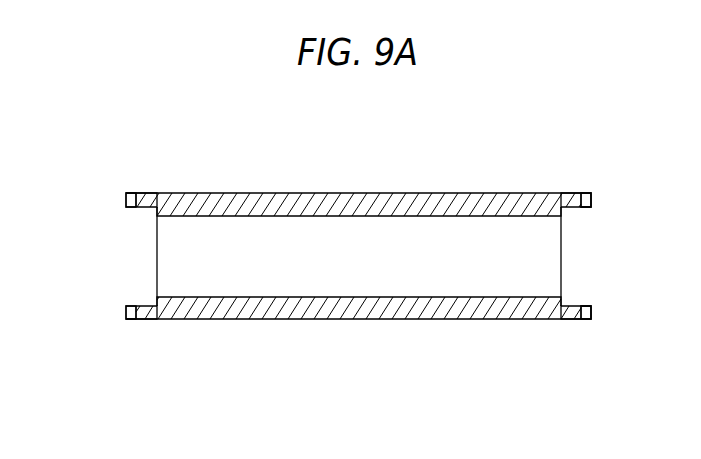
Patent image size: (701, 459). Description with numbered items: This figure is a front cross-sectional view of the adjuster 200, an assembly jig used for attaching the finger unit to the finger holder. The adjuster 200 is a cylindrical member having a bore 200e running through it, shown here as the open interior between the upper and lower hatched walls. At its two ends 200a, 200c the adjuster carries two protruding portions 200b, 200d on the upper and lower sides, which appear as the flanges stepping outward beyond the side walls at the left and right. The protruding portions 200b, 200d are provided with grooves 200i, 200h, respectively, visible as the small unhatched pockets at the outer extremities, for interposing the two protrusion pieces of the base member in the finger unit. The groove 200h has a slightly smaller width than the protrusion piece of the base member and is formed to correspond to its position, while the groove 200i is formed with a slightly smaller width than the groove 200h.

The adjuster 200 is at (328, 193).
The end 200a is at (157, 253).
The protruding portion 200b is at (568, 195).
The end 200c is at (562, 258).
The protruding portion 200d is at (148, 197).
The bore 200e is at (385, 280).
The groove 200h is at (131, 195).
The groove 200i is at (584, 195).